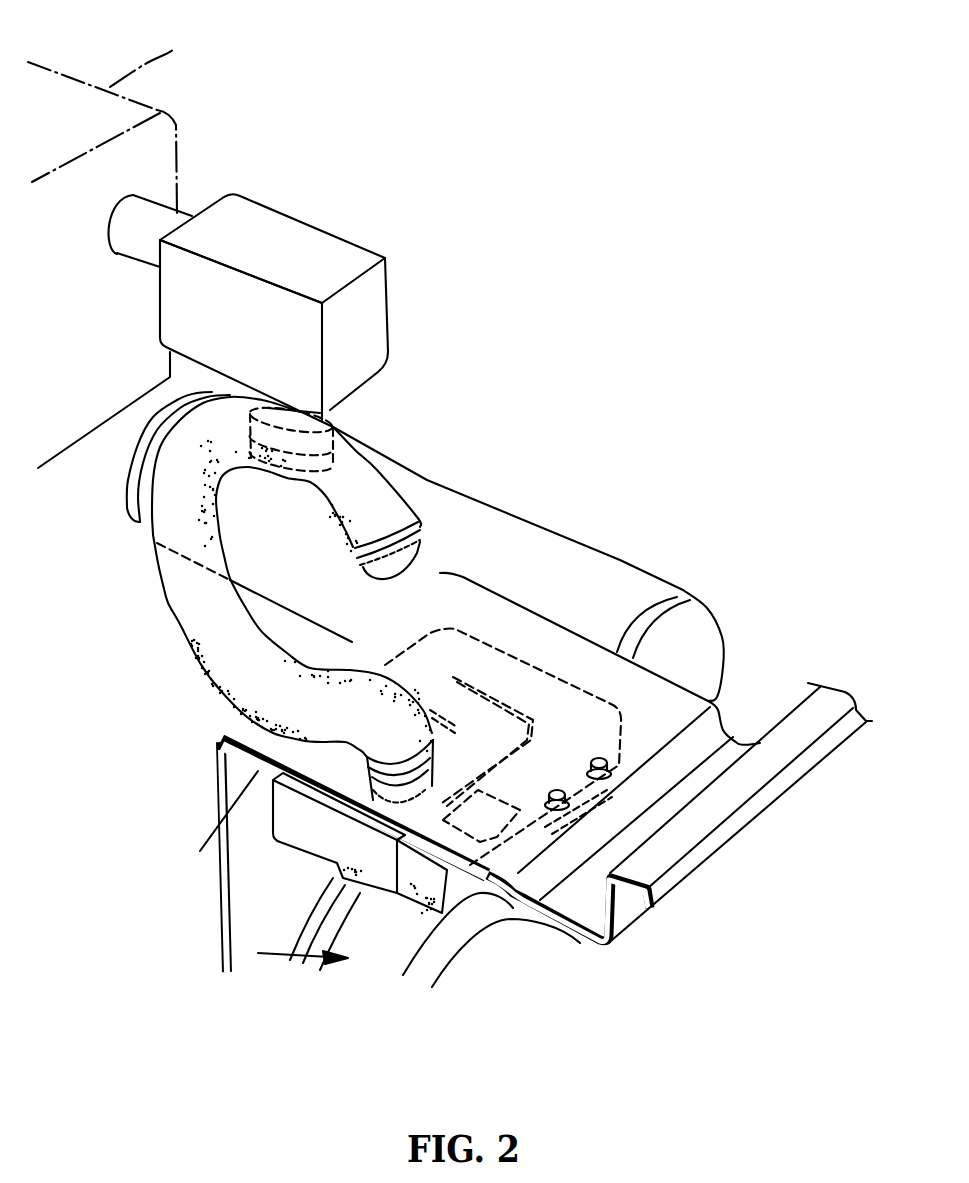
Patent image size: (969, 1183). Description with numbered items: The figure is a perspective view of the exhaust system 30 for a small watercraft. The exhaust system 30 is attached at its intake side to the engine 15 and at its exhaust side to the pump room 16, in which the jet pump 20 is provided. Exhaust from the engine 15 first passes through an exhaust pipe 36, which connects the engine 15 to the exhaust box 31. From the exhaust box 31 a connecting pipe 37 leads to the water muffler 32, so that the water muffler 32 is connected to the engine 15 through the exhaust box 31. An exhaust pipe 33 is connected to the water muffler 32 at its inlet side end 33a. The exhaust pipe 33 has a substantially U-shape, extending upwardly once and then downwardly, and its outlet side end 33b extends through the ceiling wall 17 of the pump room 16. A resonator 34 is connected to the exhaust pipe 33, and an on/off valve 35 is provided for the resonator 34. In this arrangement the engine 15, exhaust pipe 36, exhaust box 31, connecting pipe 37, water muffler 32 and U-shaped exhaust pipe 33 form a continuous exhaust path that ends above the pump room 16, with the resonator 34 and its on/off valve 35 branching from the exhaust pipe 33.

The engine 15 is at (173, 50).
The pump room 16 is at (556, 646).
The ceiling wall 17 is at (320, 667).
The jet pump 20 is at (255, 965).
The exhaust system 30 is at (616, 176).
The exhaust box 31 is at (265, 218).
The water muffler 32 is at (553, 552).
The exhaust pipe 33 is at (173, 588).
The inlet side end 33a is at (375, 571).
The outlet side end 33b is at (350, 795).
The resonator 34 is at (297, 822).
The on/off valve 35 is at (407, 893).
The exhaust pipe 36 is at (142, 212).
The connecting pipe 37 is at (330, 425).